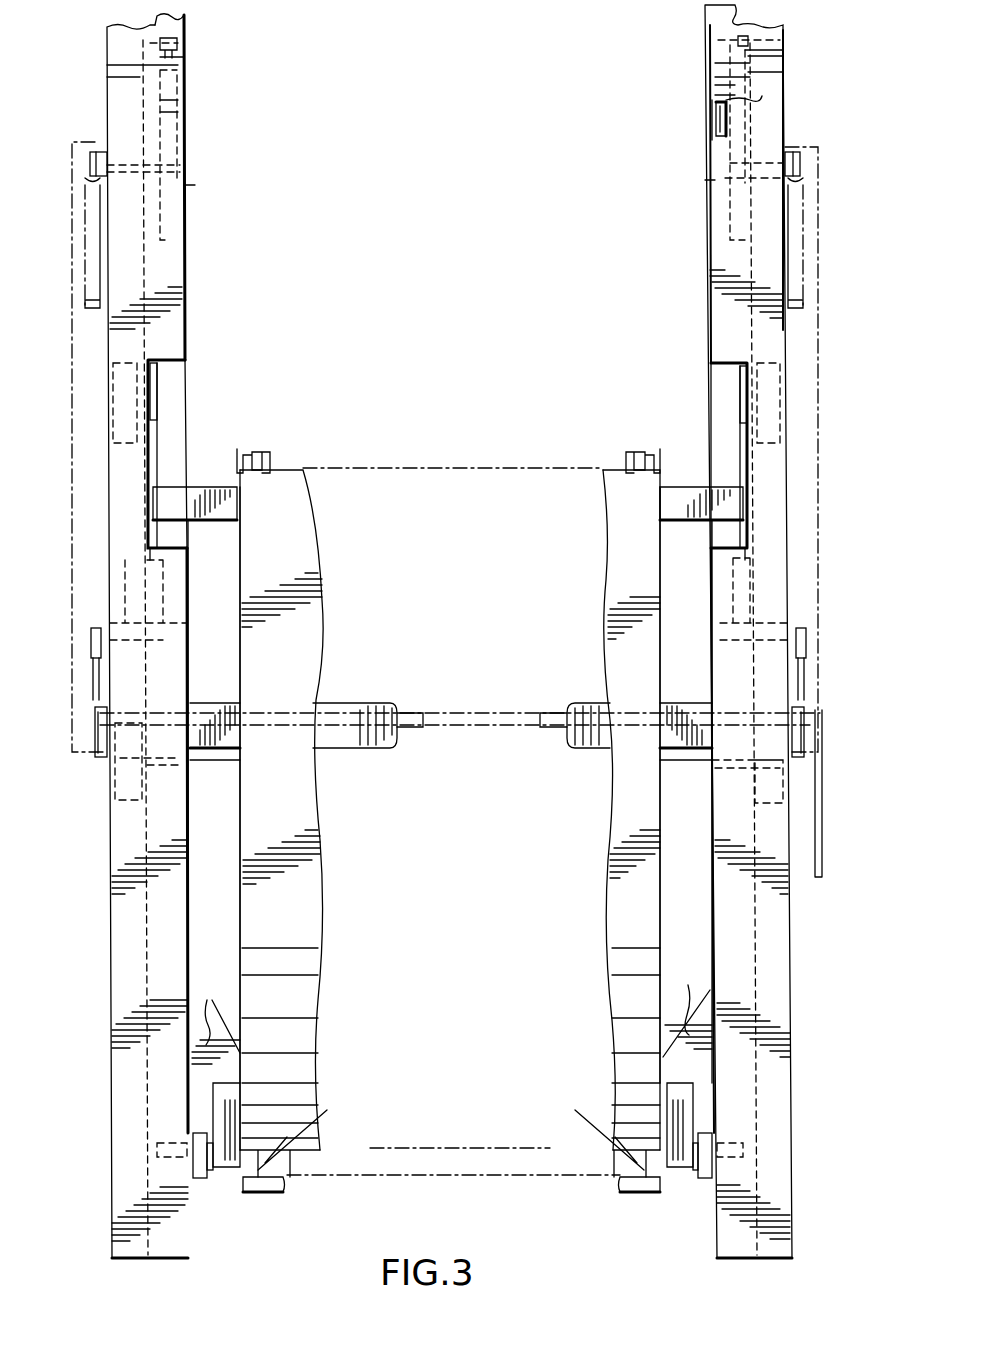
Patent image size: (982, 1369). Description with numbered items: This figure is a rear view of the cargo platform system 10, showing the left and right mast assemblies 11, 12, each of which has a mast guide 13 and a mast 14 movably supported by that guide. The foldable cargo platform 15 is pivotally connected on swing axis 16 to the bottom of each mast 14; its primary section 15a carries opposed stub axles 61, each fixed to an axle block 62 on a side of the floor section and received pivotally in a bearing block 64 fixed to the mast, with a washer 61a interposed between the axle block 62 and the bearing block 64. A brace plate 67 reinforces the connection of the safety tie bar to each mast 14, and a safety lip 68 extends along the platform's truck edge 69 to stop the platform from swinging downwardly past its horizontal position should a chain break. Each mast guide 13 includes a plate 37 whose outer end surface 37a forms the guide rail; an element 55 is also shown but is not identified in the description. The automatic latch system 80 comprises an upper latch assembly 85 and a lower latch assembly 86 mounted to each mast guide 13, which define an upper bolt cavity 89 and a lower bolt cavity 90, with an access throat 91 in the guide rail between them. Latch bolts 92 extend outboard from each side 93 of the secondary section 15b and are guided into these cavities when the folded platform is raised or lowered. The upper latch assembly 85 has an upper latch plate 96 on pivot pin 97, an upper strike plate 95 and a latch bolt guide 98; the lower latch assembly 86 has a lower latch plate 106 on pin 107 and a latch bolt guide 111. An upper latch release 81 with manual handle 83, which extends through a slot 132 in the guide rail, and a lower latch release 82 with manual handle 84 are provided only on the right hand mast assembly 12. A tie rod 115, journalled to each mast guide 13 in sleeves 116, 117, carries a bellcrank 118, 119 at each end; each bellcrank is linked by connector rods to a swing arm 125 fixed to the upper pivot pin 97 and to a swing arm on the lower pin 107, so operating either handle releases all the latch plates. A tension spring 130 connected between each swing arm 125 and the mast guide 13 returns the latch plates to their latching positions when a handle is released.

The cargo platform system 10 is at (463, 385).
The mast assembly 11 is at (220, 140).
The mast assembly 12 is at (685, 62).
The mast guide 13 is at (105, 44).
The mast 14 is at (192, 385).
The cargo platform 15 is at (604, 592).
The primary section 15a is at (285, 1160).
The secondary section 15b is at (305, 817).
The swing axis 16 is at (440, 1148).
The plate 37 is at (108, 1003).
The outer end surface 37a is at (125, 1050).
The inner plate 55 is at (185, 32).
The stub axle 61 is at (185, 1157).
The washer 61a is at (210, 1170).
The axle block 62 is at (232, 1098).
The bearing block 64 is at (200, 1160).
The brace plate 67 is at (452, 1011).
The safety lip 68 is at (272, 1195).
The truck edge 69 is at (327, 1110).
The automatic latch system 80 is at (207, 105).
The upper latch release 81 is at (692, 108).
The lower latch release 82 is at (805, 848).
The manual handle 83 is at (718, 128).
The manual handle 84 is at (820, 878).
The upper latch assembly 85 is at (200, 192).
The lower latch assembly 86 is at (205, 660).
The upper bolt cavity 89 is at (195, 65).
The lower bolt cavity 90 is at (178, 752).
The access throat 91 is at (195, 345).
The latch bolt 92 is at (218, 516).
The side 93 is at (238, 572).
The upper strike plate 95 is at (107, 60).
The upper latch plate 96 is at (195, 125).
The pin 97 is at (195, 168).
The latch bolt guide 98 is at (172, 228).
The lower latch plate 106 is at (187, 630).
The pin 107 is at (456, 599).
The latch bolt guide 111 is at (175, 592).
The tie rod 115 is at (538, 727).
The sleeve 116 is at (102, 700).
The sleeve 117 is at (800, 712).
The bellcrank 118 is at (93, 757).
The bellcrank 119 is at (808, 760).
The swing arm 125 is at (95, 150).
The tension spring 130 is at (96, 265).
The slot 132 is at (737, 100).